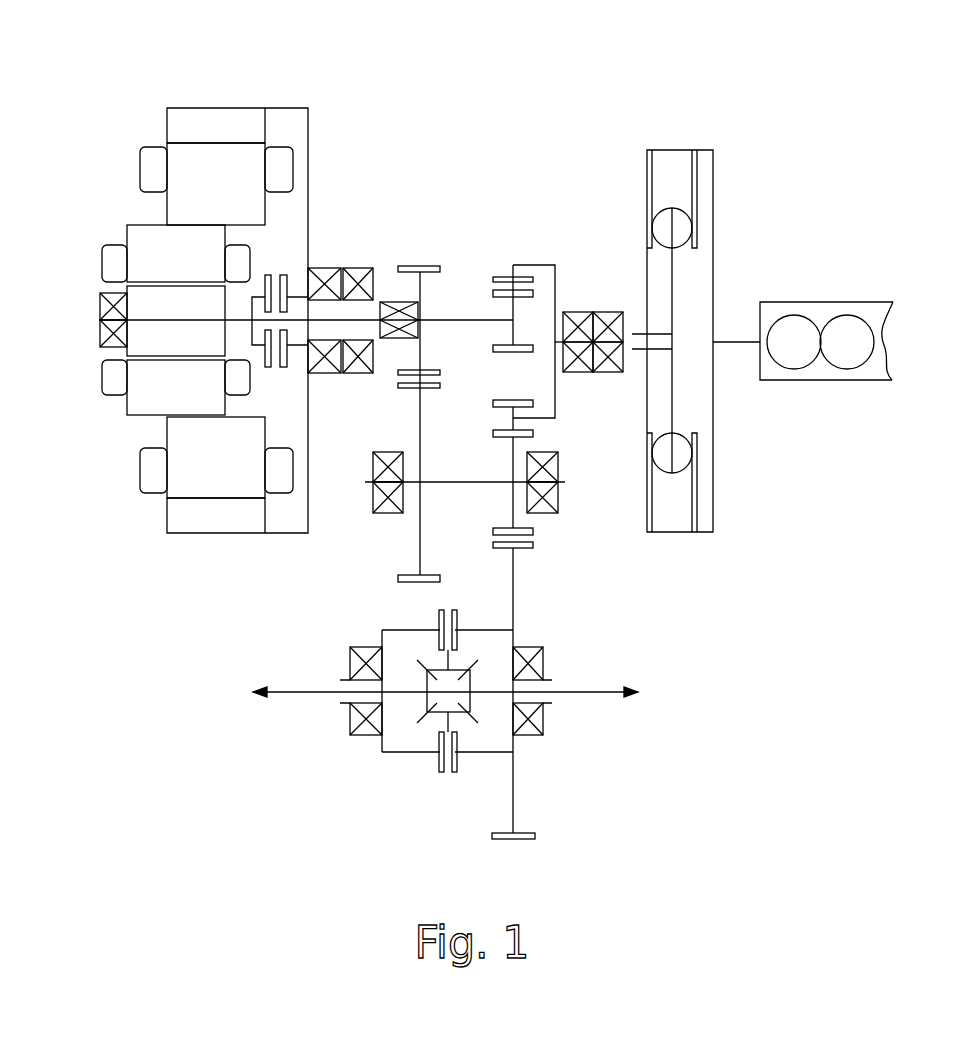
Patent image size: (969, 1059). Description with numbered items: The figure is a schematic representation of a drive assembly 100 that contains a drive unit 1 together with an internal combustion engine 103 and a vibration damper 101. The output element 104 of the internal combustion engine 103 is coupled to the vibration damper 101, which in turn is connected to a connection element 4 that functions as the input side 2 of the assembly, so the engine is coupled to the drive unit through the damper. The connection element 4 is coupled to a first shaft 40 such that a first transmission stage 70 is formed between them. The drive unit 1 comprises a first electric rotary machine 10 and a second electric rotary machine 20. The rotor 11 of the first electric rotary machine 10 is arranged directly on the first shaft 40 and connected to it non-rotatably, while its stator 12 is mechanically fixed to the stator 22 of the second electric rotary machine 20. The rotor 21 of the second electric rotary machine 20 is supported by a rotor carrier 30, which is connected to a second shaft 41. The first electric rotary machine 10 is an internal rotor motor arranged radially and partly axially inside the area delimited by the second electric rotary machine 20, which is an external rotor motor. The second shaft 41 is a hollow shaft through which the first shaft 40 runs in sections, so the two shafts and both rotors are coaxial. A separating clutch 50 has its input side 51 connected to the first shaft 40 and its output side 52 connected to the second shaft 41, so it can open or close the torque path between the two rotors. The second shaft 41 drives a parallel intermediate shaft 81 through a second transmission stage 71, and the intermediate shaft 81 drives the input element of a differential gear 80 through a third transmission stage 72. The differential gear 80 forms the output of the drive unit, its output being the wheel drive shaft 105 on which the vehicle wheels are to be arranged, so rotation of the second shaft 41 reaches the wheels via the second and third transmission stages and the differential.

The drive unit 1 is at (152, 112).
The input side 2 is at (555, 275).
The connection element 4 is at (534, 341).
The first electric rotary machine 10 is at (143, 232).
The rotor 11 is at (140, 289).
The stator 12 is at (176, 320).
The second electric rotary machine 20 is at (185, 203).
The rotor 21 is at (177, 122).
The stator 22 is at (216, 320).
The rotor carrier 30 is at (287, 108).
The first shaft 40 is at (453, 318).
The second shaft 41 is at (381, 300).
The separating clutch 50 is at (275, 355).
The input side 51 is at (253, 332).
The output side 52 is at (300, 348).
The first transmission stage 70 is at (523, 292).
The second transmission stage 71 is at (402, 380).
The third transmission stage 72 is at (533, 538).
The differential gear 80 is at (405, 743).
The intermediate shaft 81 is at (445, 480).
The drive assembly 100 is at (790, 125).
The vibration damper 101 is at (666, 170).
The internal combustion engine 103 is at (822, 312).
The output element 104 is at (727, 337).
The wheel drive shaft 105 is at (293, 692).